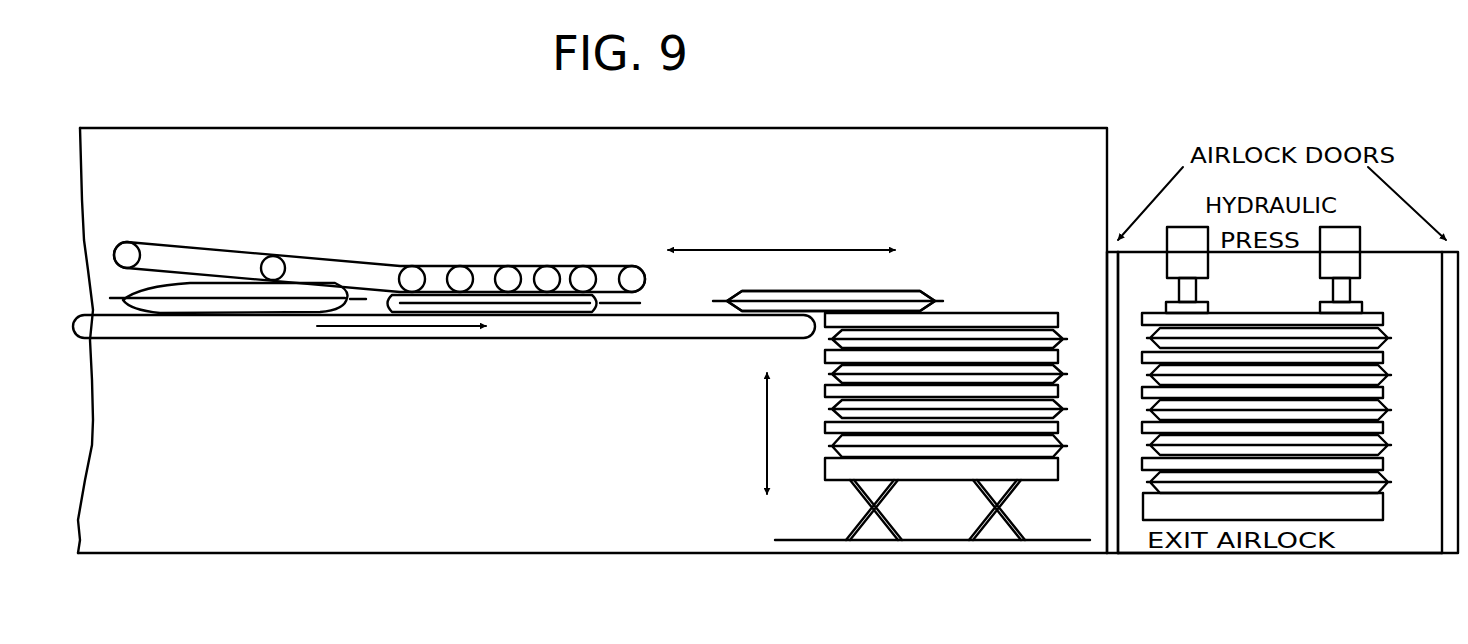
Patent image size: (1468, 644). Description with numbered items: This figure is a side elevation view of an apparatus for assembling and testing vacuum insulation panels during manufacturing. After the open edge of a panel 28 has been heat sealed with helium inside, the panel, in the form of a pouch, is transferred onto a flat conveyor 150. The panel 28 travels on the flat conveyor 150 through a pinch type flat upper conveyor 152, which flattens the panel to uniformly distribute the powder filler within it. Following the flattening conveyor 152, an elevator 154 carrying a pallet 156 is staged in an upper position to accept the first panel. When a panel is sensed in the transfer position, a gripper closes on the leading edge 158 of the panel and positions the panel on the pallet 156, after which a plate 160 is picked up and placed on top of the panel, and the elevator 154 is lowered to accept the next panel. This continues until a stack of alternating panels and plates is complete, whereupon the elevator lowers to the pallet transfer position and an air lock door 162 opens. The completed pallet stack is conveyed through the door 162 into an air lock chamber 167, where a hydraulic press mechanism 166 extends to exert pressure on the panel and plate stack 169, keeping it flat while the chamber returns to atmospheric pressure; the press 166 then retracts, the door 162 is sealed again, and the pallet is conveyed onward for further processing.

The panel 28 is at (150, 297).
The flat conveyor 150 is at (278, 323).
The pinch type flat upper conveyor 152 is at (393, 248).
The elevator 154 is at (998, 512).
The pallet 156 is at (1060, 467).
The leading edge 158 is at (942, 306).
The plate 160 is at (828, 420).
The air lock door 162 is at (1112, 275).
The hydraulic press mechanism 166 is at (1330, 262).
The air lock chamber 167 is at (1367, 537).
The panel stack in airlock 169 is at (1380, 389).